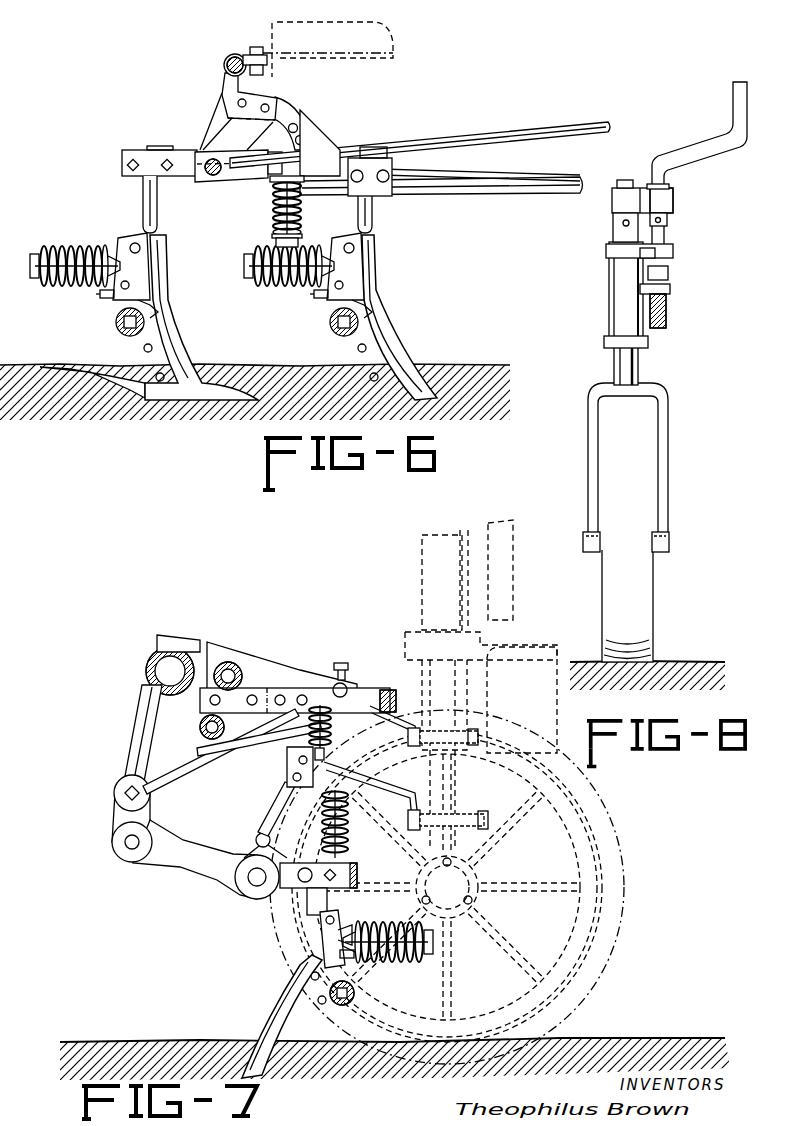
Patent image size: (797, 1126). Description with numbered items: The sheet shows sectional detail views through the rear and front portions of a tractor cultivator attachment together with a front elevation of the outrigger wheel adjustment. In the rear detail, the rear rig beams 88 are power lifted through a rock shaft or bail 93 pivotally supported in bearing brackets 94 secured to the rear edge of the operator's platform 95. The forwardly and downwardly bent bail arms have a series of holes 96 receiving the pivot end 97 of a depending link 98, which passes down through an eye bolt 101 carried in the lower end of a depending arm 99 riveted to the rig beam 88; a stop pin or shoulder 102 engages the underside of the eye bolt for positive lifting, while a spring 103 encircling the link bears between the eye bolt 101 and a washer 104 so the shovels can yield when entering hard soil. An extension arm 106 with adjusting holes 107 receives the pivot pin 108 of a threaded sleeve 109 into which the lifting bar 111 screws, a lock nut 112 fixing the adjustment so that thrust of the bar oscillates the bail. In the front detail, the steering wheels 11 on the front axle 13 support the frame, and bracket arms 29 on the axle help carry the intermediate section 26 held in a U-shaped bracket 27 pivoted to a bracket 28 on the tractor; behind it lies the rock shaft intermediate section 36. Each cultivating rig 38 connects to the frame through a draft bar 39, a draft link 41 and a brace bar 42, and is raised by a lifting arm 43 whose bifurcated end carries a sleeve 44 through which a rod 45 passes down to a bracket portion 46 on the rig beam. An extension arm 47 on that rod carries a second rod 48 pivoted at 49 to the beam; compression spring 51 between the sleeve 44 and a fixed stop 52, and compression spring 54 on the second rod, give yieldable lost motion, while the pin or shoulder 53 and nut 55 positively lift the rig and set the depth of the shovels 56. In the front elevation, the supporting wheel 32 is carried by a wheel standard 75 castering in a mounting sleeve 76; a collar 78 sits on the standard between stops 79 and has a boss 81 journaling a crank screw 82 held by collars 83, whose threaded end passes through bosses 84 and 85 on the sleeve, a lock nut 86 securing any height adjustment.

In FIG. 6, the rig beam 88 is at (468, 192).
In FIG. 6, the rock shaft or bail 93 is at (224, 62).
In FIG. 6, the bearing brackets 94 is at (244, 55).
In FIG. 6, the operator's platform 95 is at (395, 42).
In FIG. 6, the holes 96 is at (296, 127).
In FIG. 6, the pivot end 97 is at (308, 140).
In FIG. 6, the depending link 98 is at (276, 242).
In FIG. 6, the depending arm 99 is at (270, 184).
In FIG. 6, the eye bolt 101 is at (312, 230).
In FIG. 6, the stop pin or shoulder 102 is at (272, 234).
In FIG. 6, the spring 103 is at (272, 212).
In FIG. 6, the washer 104 is at (315, 160).
In FIG. 6, the extension arm 106 is at (228, 112).
In FIG. 6, the adjusting holes 107 is at (190, 150).
In FIG. 6, the pivot pin 108 is at (190, 182).
In FIG. 6, the sleeve 109 is at (242, 143).
In FIG. 6, the lifting bar 111 is at (412, 147).
In FIG. 6, the lock nut 112 is at (272, 150).
In FIG. 8, the supporting wheel 32 is at (653, 596).
In FIG. 8, the wheel standard 75 is at (620, 364).
In FIG. 8, the mounting sleeve 76 is at (615, 296).
In FIG. 8, the collar 78 is at (625, 198).
In FIG. 8, the shoulders or stops 79 is at (625, 180).
In FIG. 8, the boss 81 is at (673, 202).
In FIG. 8, the crank screw 82 is at (710, 150).
In FIG. 8, the collars or shoulders 83 is at (666, 180).
In FIG. 8, the boss 84 is at (673, 254).
In FIG. 8, the boss 85 is at (670, 292).
In FIG. 8, the lock nut 86 is at (668, 273).
In FIG. 7, the steering wheels 11 is at (612, 925).
In FIG. 7, the front axle 13 is at (450, 782).
In FIG. 7, the intermediate section 26 is at (146, 665).
In FIG. 7, the U-shaped bracket 27 is at (372, 698).
In FIG. 7, the bracket 28 is at (424, 708).
In FIG. 7, the bracket arms 29 is at (205, 745).
In FIG. 7, the rock shaft intermediate section 36 is at (240, 660).
In FIG. 7, the cultivating rig 38 is at (357, 872).
In FIG. 7, the draft bar 39 is at (135, 745).
In FIG. 7, the draft link 41 is at (190, 862).
In FIG. 7, the brace bar 42 is at (185, 768).
In FIG. 7, the lifting arm 43 is at (285, 668).
In FIG. 7, the sleeve 44 is at (338, 666).
In FIG. 7, the rod 45 is at (288, 804).
In FIG. 7, the bracket portion 46 is at (258, 838).
In FIG. 7, the extension arm 47 is at (287, 768).
In FIG. 7, the rod 48 is at (360, 750).
In FIG. 7, the pivotal connection 49 is at (336, 892).
In FIG. 7, the compression spring 51 is at (333, 722).
In FIG. 7, the fixed stop 52 is at (312, 736).
In FIG. 7, the pin or shoulder 53 is at (352, 672).
In FIG. 7, the compression spring 54 is at (362, 808).
In FIG. 7, the nut 55 is at (326, 760).
In FIG. 7, the shovels 56 is at (296, 1000).